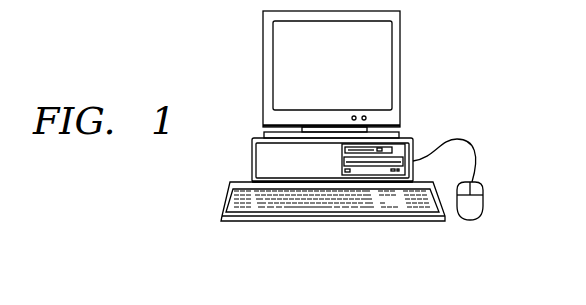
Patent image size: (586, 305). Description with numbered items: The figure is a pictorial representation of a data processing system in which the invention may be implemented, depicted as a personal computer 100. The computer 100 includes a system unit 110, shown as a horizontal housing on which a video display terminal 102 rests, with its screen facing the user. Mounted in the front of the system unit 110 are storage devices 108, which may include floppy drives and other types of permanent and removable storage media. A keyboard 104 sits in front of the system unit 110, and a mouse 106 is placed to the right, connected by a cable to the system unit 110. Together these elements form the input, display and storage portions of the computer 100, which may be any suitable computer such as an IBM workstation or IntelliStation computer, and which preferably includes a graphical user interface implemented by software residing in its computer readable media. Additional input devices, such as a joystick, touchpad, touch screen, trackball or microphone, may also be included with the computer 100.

The computer 100 is at (151, 28).
The video display terminal 102 is at (278, 66).
The keyboard 104 is at (250, 205).
The mouse 106 is at (471, 217).
The storage devices 108 is at (380, 149).
The system unit 110 is at (253, 158).